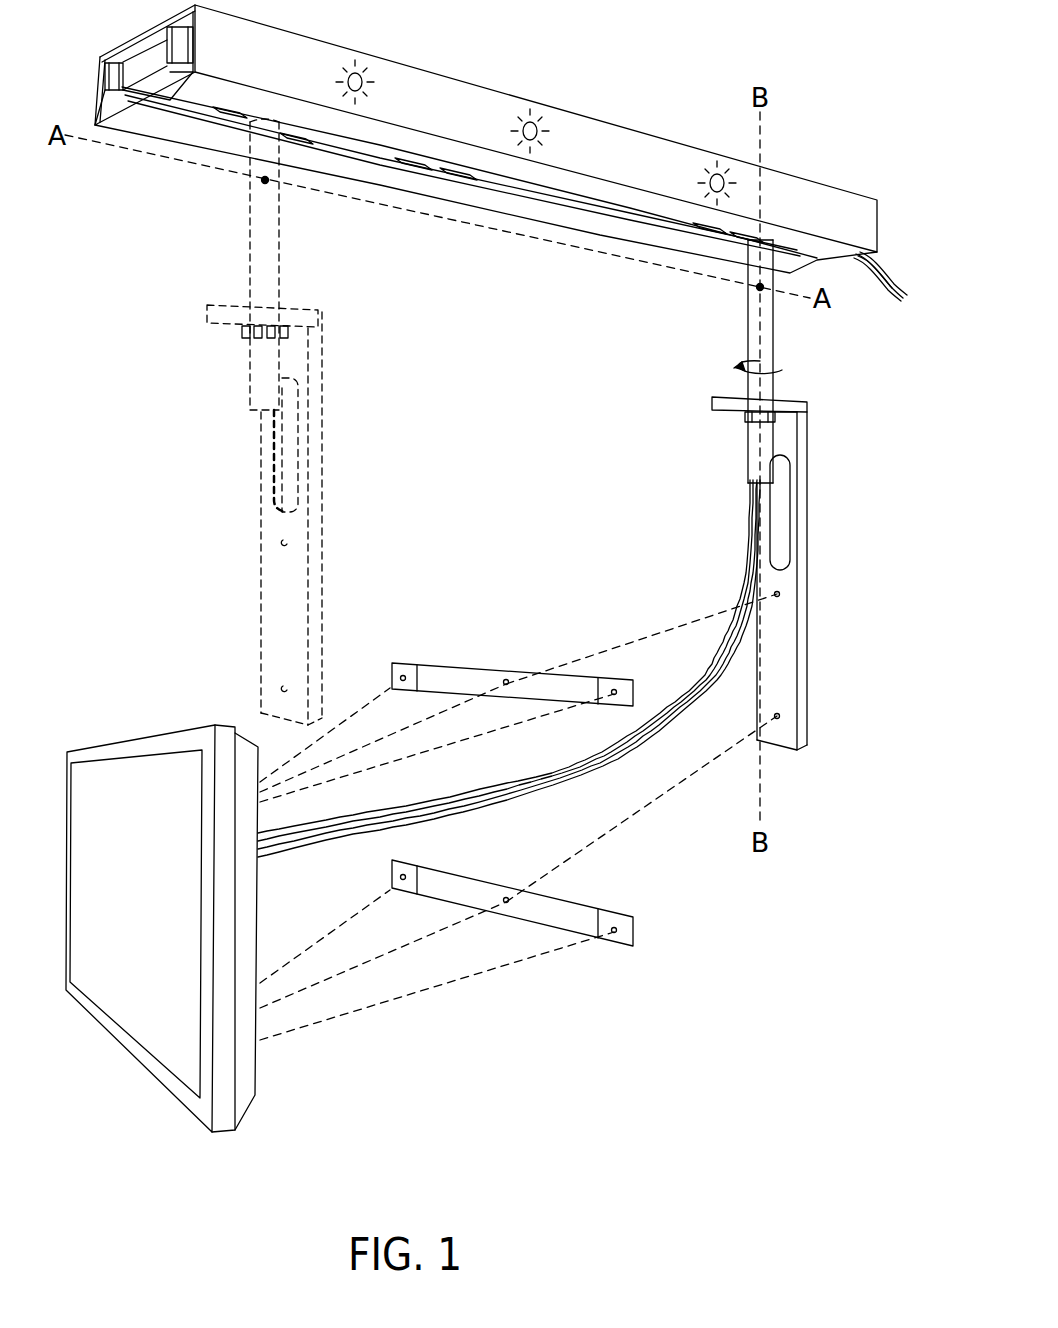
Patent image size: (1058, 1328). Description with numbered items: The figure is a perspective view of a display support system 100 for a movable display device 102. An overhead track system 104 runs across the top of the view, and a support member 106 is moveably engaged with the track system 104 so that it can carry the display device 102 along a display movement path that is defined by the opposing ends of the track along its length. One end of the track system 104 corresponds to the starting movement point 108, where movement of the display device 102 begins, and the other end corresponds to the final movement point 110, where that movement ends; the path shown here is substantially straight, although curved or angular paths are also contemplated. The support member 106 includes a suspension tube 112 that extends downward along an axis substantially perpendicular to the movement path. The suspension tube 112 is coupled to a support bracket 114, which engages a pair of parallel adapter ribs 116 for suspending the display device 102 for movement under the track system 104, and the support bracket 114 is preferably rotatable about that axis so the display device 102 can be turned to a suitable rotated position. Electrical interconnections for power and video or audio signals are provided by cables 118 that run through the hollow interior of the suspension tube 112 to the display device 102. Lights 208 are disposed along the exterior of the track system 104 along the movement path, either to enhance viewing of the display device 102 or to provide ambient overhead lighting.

The display support system 100 is at (754, 918).
The display device 102 is at (248, 1075).
The track system 104 is at (638, 134).
The support member 106 is at (676, 384).
The starting movement point 108 is at (756, 288).
The final movement point 110 is at (262, 184).
The suspension tube 112 is at (768, 343).
The support bracket 114 is at (803, 652).
The adapter ribs 116 is at (484, 666).
The cables 118 is at (868, 287).
The lights 208 is at (360, 70).